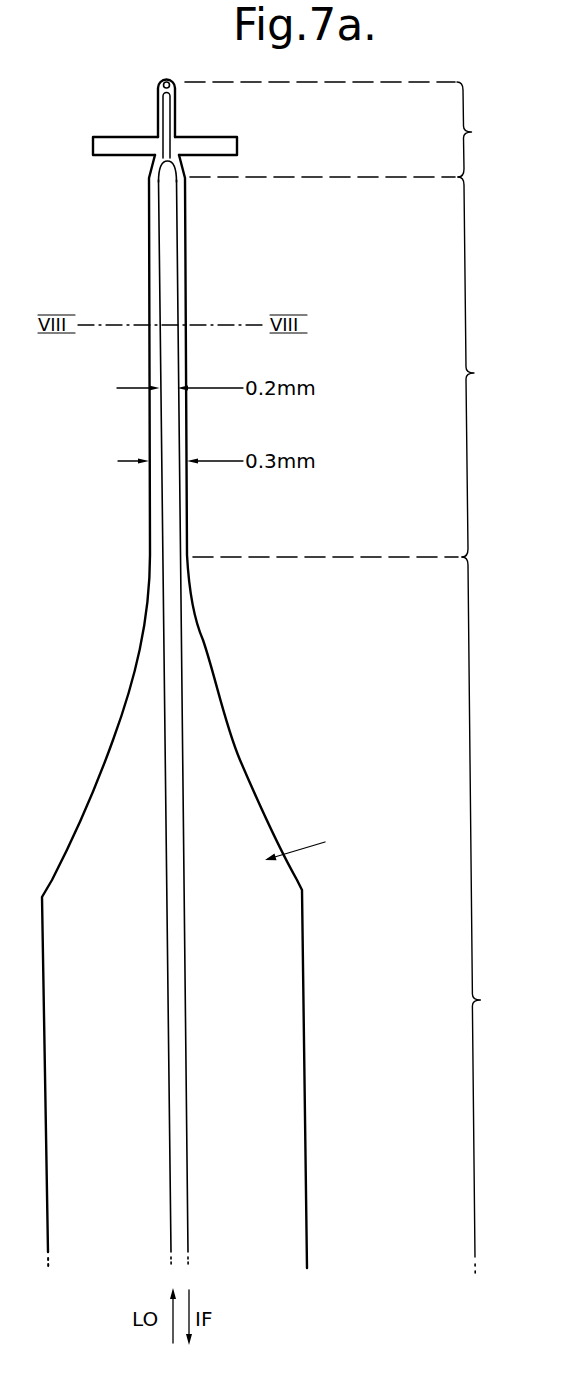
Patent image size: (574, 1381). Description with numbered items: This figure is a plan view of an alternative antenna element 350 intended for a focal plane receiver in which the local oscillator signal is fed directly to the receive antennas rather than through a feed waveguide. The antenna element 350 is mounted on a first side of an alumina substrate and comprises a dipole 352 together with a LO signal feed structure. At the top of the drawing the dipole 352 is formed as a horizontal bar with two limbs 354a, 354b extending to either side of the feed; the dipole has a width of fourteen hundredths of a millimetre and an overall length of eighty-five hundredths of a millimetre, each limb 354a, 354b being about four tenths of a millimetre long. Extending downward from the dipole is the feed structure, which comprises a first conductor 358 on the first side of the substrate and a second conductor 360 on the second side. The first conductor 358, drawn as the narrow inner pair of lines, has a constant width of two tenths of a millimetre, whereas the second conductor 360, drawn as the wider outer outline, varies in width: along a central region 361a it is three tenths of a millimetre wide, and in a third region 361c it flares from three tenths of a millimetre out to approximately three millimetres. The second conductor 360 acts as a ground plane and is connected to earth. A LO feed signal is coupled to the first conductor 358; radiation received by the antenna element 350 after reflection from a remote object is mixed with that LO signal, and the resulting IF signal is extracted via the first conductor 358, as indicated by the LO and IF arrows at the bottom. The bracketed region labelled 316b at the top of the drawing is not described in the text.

The antenna element 350 is at (188, 674).
The dipole 352 is at (238, 137).
The limb 354a is at (93, 157).
The limb 354b is at (238, 155).
The first conductor 358 is at (182, 752).
The second conductor 360 is at (215, 683).
The waveguide section 316b is at (495, 129).
The central region 361a is at (495, 367).
The third region 361c is at (500, 915).